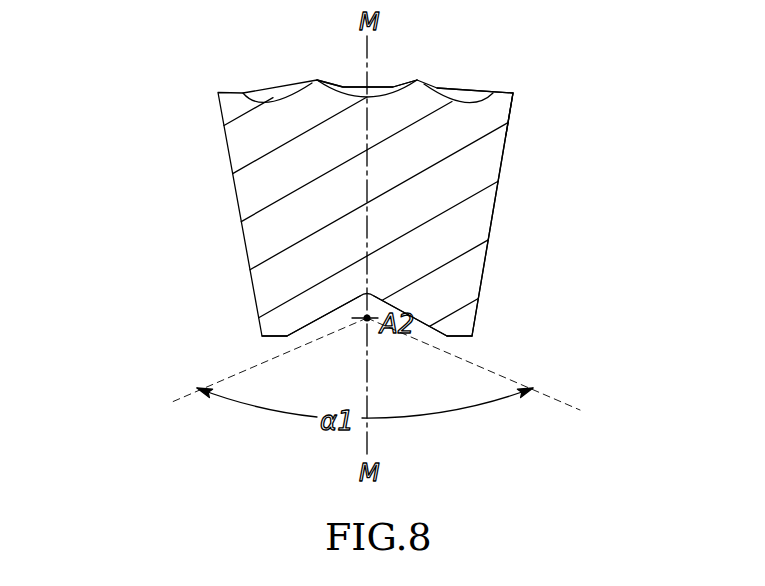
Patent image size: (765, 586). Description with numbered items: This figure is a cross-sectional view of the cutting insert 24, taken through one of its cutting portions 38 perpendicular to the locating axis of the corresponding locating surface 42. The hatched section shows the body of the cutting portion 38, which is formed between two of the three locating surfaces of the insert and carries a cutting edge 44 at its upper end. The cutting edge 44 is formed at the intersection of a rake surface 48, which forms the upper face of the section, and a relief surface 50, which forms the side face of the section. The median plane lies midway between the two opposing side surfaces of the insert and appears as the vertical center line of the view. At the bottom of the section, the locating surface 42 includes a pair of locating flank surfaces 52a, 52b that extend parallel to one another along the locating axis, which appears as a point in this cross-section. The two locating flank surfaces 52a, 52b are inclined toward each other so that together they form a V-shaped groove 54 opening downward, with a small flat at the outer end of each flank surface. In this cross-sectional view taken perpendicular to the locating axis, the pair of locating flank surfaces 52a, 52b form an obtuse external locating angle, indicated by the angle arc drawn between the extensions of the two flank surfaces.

The cutting insert 24 is at (205, 104).
The cutting portion 38 is at (309, 210).
The locating surface 42 is at (414, 318).
The cutting edge 44 is at (515, 92).
The rake surface 48 is at (427, 86).
The relief surface 50 is at (496, 214).
The locating flank surface 52a is at (429, 329).
The locating flank surface 52b is at (301, 330).
The V-shaped groove 54 is at (329, 316).